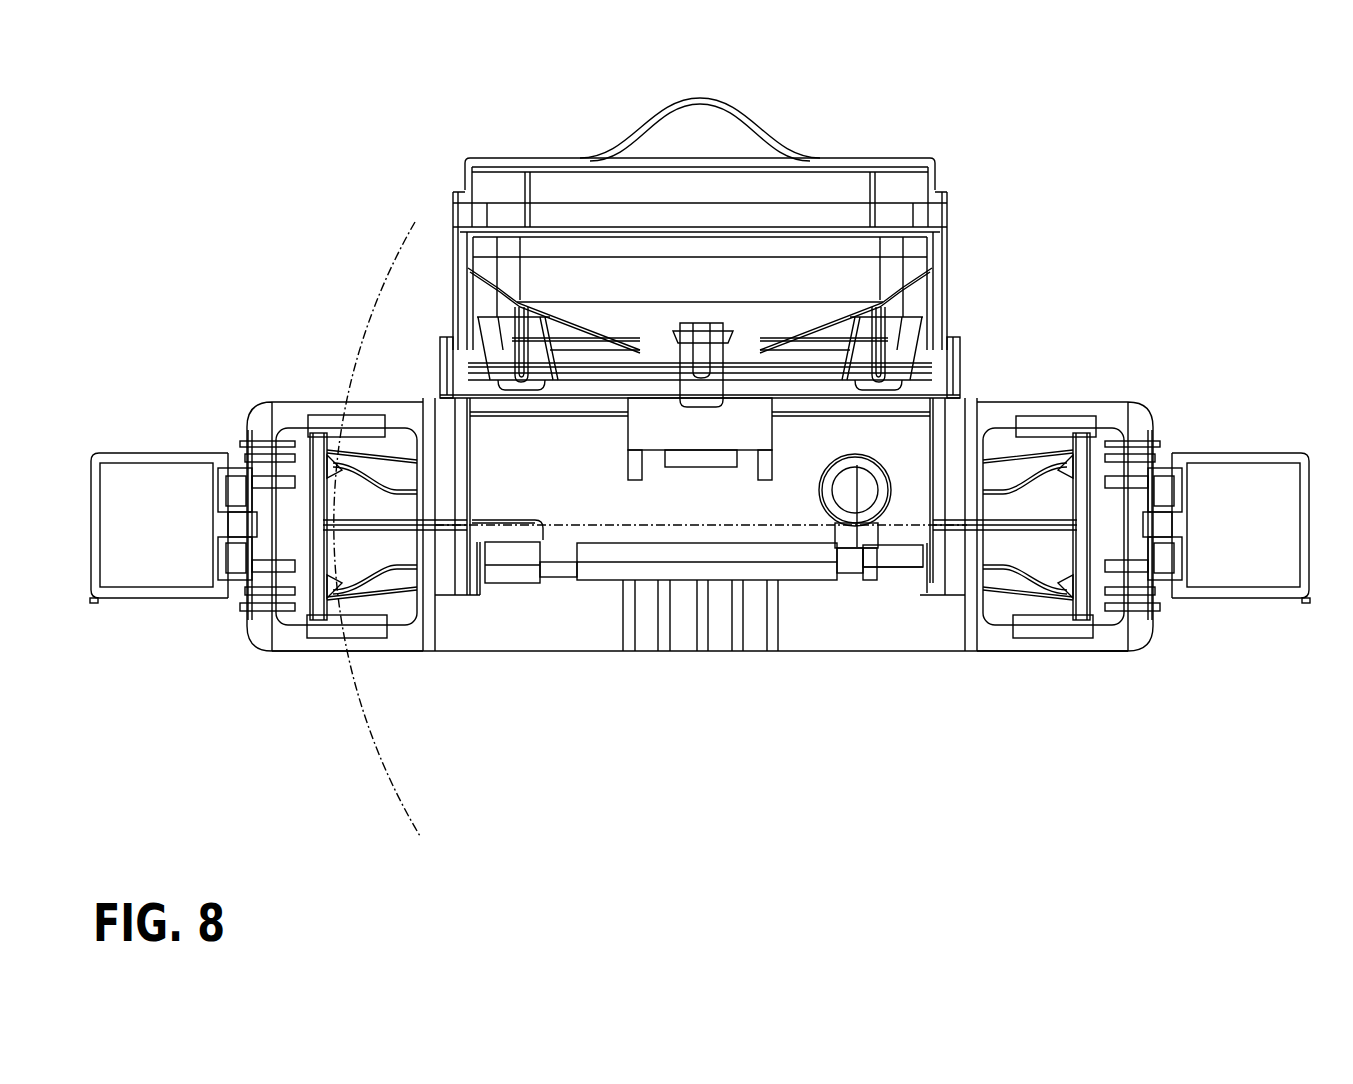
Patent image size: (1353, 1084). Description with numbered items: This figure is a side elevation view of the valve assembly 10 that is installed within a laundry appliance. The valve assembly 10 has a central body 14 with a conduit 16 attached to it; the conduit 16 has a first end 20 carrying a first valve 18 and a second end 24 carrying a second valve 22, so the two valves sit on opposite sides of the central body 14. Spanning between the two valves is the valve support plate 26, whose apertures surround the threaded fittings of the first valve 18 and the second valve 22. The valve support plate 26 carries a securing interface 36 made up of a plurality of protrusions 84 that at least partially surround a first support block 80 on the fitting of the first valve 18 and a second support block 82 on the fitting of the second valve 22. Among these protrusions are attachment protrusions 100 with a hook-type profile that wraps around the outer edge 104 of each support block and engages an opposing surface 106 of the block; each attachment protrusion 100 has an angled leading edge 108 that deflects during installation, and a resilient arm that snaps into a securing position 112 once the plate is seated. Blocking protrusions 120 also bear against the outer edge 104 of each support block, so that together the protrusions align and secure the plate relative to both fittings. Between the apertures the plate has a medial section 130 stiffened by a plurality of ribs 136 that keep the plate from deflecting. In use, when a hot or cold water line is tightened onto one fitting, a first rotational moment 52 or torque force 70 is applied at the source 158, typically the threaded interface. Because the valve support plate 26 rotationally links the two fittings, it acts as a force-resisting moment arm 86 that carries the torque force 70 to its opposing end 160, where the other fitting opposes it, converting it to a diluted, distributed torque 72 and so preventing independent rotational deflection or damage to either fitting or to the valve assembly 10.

The valve assembly 10 is at (1015, 173).
The central body 14 is at (833, 210).
The conduit 16 is at (800, 570).
The first valve 18 is at (1177, 423).
The first end 20 is at (920, 573).
The second valve 22 is at (212, 440).
The second end 24 is at (485, 585).
The valve support plate 26 is at (617, 677).
The securing interface 36 is at (263, 633).
The first rotational moment 52 is at (1162, 660).
The torque force 70 is at (1118, 697).
The distributed torque 72 is at (368, 725).
The first support block 80 is at (1110, 415).
The second support block 82 is at (295, 430).
The plurality of protrusions 84 is at (1044, 414).
The moment arm 86 is at (752, 527).
The attachment protrusions 100 is at (370, 638).
The outer edge 104 is at (398, 430).
The opposing surface 106 is at (1000, 445).
The angled leading edge 108 is at (1063, 430).
The securing position 112 is at (1160, 618).
The blocking protrusions 120 is at (428, 628).
The medial section 130 is at (647, 618).
The plurality of ribs 136 is at (625, 617).
The source 158 is at (1203, 490).
The opposing end 160 is at (248, 620).